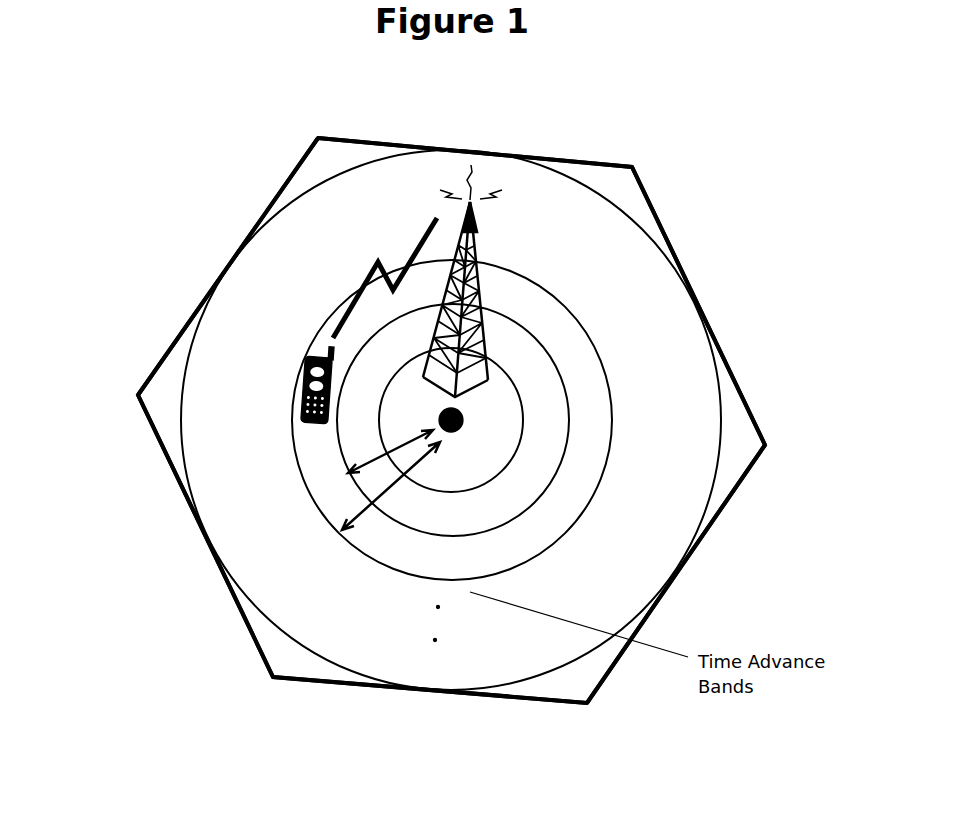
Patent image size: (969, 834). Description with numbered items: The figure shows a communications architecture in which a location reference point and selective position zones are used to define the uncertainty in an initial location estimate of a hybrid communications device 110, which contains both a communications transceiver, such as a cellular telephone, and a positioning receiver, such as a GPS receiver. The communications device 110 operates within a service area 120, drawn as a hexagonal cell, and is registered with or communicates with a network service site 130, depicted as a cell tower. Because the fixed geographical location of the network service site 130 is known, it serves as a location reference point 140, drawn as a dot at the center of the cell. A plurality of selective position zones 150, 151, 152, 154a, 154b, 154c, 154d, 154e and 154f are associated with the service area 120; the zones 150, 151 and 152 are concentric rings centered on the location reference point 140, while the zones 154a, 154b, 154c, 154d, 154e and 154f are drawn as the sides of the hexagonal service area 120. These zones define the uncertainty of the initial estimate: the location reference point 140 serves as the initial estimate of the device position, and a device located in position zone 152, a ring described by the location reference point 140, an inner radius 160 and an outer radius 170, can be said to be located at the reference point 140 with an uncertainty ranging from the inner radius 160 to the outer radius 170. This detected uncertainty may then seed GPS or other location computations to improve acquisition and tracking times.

The hybrid communications device 110 is at (307, 360).
The service area 120 is at (595, 163).
The network service site 130 is at (483, 255).
The location reference point 140 is at (455, 420).
The selective position zone 150 is at (451, 420).
The selective position zone 151 is at (453, 420).
The selective position zone 152 is at (452, 420).
The selective position zone 154a is at (628, 203).
The selective position zone 154b is at (742, 441).
The selective position zone 154c is at (574, 680).
The selective position zone 154d is at (283, 652).
The selective position zone 154e is at (163, 395).
The selective position zone 154f is at (318, 170).
The inner radius r1 160 is at (383, 440).
The outer radius r2 170 is at (395, 480).